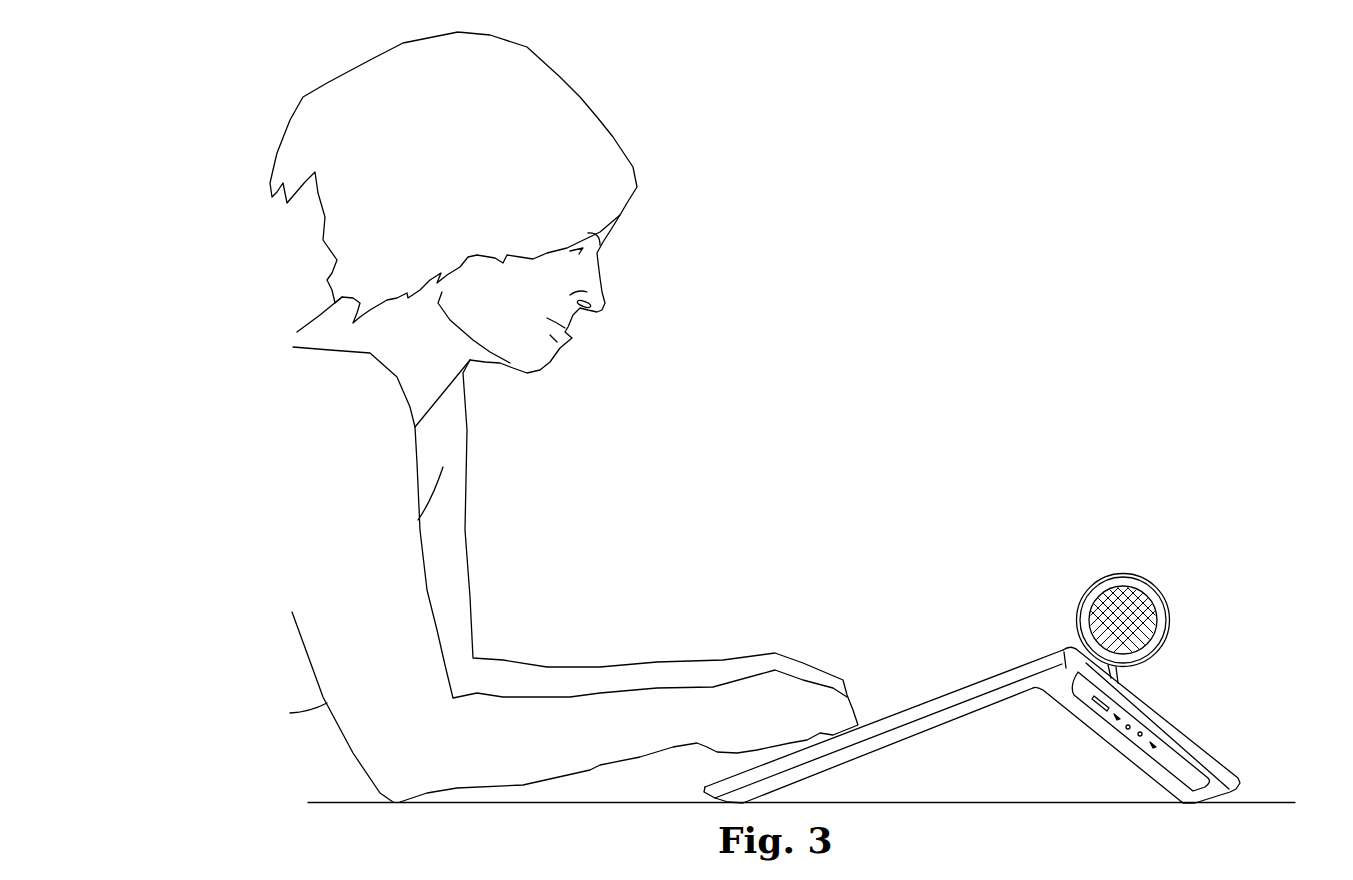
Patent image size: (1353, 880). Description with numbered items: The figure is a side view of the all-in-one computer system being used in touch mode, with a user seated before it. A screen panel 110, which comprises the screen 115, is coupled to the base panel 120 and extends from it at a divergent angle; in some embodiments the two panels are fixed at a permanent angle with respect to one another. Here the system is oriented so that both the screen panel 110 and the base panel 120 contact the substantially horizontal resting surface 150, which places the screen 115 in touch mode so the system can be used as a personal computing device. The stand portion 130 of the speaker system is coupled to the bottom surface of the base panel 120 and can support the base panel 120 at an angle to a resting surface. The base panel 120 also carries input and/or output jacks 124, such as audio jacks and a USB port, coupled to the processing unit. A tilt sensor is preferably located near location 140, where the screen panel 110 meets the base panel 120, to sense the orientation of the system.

The screen panel 110 is at (968, 717).
The screen 115 is at (930, 700).
The base panel 120 is at (1152, 706).
The input and/or output jacks 124 is at (1113, 718).
The stand portion 130 is at (1166, 606).
The location 140 is at (1062, 650).
The resting surface 150 is at (1274, 800).